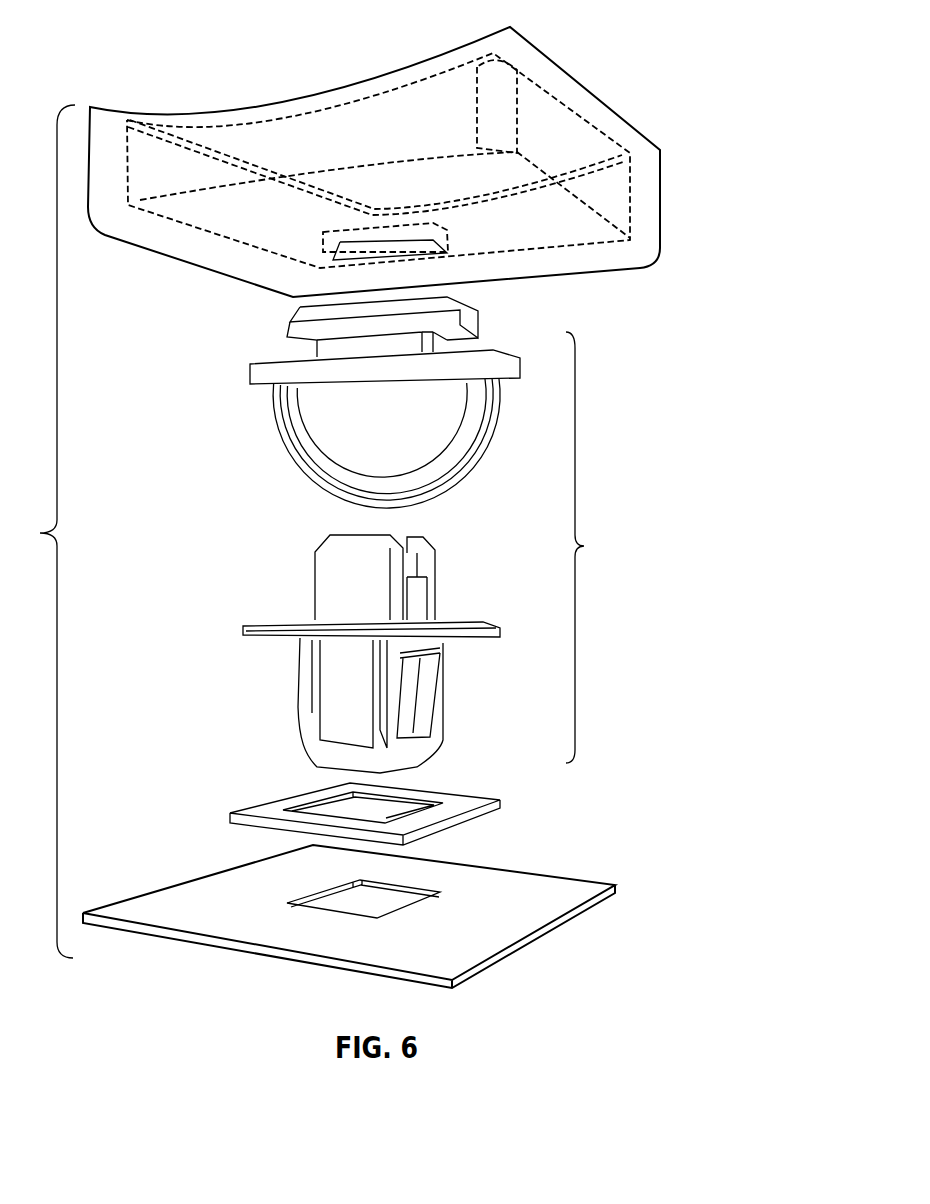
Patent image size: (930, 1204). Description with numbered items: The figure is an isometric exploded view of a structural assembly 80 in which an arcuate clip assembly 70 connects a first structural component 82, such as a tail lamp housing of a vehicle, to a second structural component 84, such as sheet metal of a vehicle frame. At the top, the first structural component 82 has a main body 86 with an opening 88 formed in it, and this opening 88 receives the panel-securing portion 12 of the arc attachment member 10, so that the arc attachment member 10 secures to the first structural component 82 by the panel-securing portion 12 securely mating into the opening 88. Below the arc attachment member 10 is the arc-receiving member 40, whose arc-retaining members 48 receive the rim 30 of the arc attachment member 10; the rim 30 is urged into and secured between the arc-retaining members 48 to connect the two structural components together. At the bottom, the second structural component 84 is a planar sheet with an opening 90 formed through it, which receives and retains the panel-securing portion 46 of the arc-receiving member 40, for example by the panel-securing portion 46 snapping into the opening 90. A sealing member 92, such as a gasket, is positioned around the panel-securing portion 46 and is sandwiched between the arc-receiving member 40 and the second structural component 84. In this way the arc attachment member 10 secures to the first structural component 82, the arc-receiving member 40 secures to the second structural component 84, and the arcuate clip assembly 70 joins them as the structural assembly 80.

The structural assembly 80 is at (39, 531).
The first structural component 82 is at (652, 187).
The main body 86 is at (603, 127).
The opening 88 is at (338, 240).
The panel-securing portion 12 is at (490, 306).
The arc attachment member 10 is at (268, 452).
The rim 30 is at (440, 487).
The arcuate clip assembly 70 is at (593, 547).
The arc-receiving member 40 is at (352, 654).
The arc-retaining members 48 is at (315, 567).
The panel-securing portion 46 is at (300, 717).
The sealing member 92 is at (223, 815).
The opening 90 is at (385, 903).
The second structural component 84 is at (585, 878).